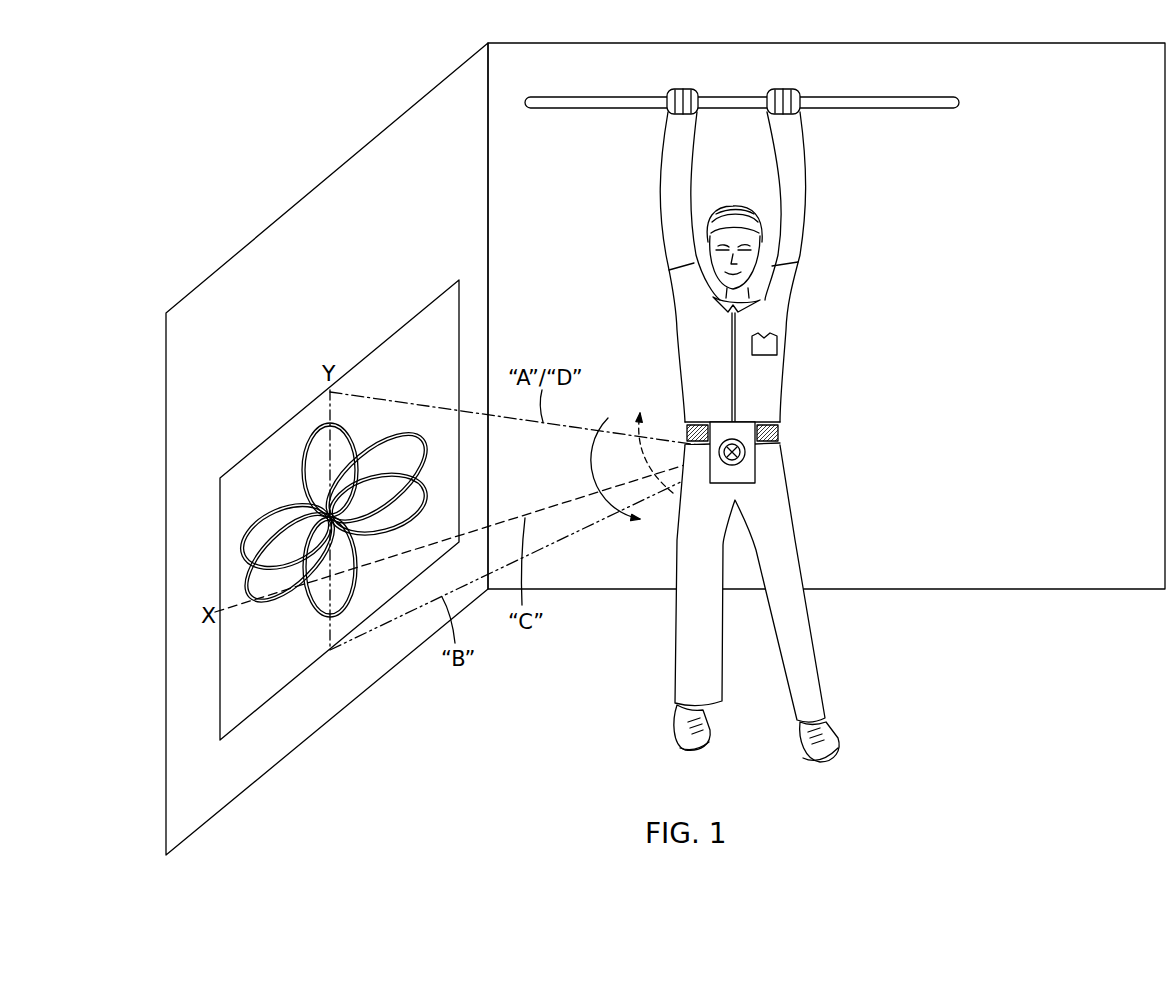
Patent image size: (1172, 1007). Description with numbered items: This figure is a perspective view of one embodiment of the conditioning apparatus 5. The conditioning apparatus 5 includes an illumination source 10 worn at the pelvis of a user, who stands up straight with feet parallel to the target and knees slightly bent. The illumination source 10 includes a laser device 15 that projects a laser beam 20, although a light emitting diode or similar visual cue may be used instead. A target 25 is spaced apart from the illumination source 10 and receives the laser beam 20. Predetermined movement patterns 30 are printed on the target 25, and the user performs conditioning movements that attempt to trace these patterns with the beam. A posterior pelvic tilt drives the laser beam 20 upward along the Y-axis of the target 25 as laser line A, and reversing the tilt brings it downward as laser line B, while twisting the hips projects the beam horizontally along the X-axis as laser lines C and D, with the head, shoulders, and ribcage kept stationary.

The conditioning apparatus 5 is at (377, 167).
The illumination source 10 is at (770, 481).
The laser device 15 is at (757, 446).
The laser beam 20 is at (592, 388).
The target 25 is at (283, 415).
The predetermined movement patterns 30 is at (310, 620).